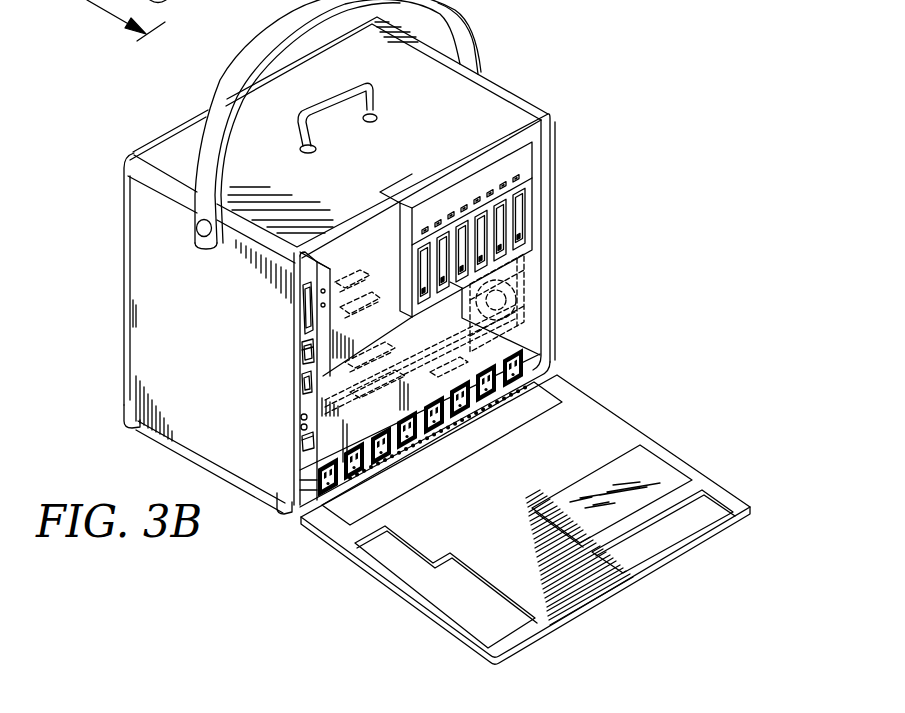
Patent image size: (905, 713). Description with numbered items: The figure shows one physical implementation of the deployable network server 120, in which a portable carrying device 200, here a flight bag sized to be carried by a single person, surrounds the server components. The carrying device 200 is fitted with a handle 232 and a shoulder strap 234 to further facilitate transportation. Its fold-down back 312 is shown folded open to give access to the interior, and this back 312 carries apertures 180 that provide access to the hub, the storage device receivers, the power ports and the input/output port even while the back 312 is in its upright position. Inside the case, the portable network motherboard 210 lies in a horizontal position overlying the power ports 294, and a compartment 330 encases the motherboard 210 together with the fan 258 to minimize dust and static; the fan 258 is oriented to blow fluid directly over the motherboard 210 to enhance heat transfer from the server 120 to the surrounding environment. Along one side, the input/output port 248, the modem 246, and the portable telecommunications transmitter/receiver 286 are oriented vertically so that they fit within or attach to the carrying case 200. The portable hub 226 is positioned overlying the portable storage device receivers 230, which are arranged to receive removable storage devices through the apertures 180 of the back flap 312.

The deployable network server 120 is at (560, 94).
The portable carrying device 200 is at (500, 98).
The shoulder strap 234 is at (218, 104).
The handle 232 is at (370, 112).
The modem 246 is at (328, 258).
The portable telecommunications transmitter/receiver 286 is at (303, 357).
The input/output port 248 is at (303, 412).
The portable hub 226 is at (458, 193).
The portable storage device receivers 230 is at (513, 222).
The compartment 330 is at (536, 261).
The fan 258 is at (548, 300).
The portable network motherboard 210 is at (423, 372).
The power ports 294 is at (477, 397).
The fold-down back 312 is at (620, 427).
The apertures 180 is at (373, 495).